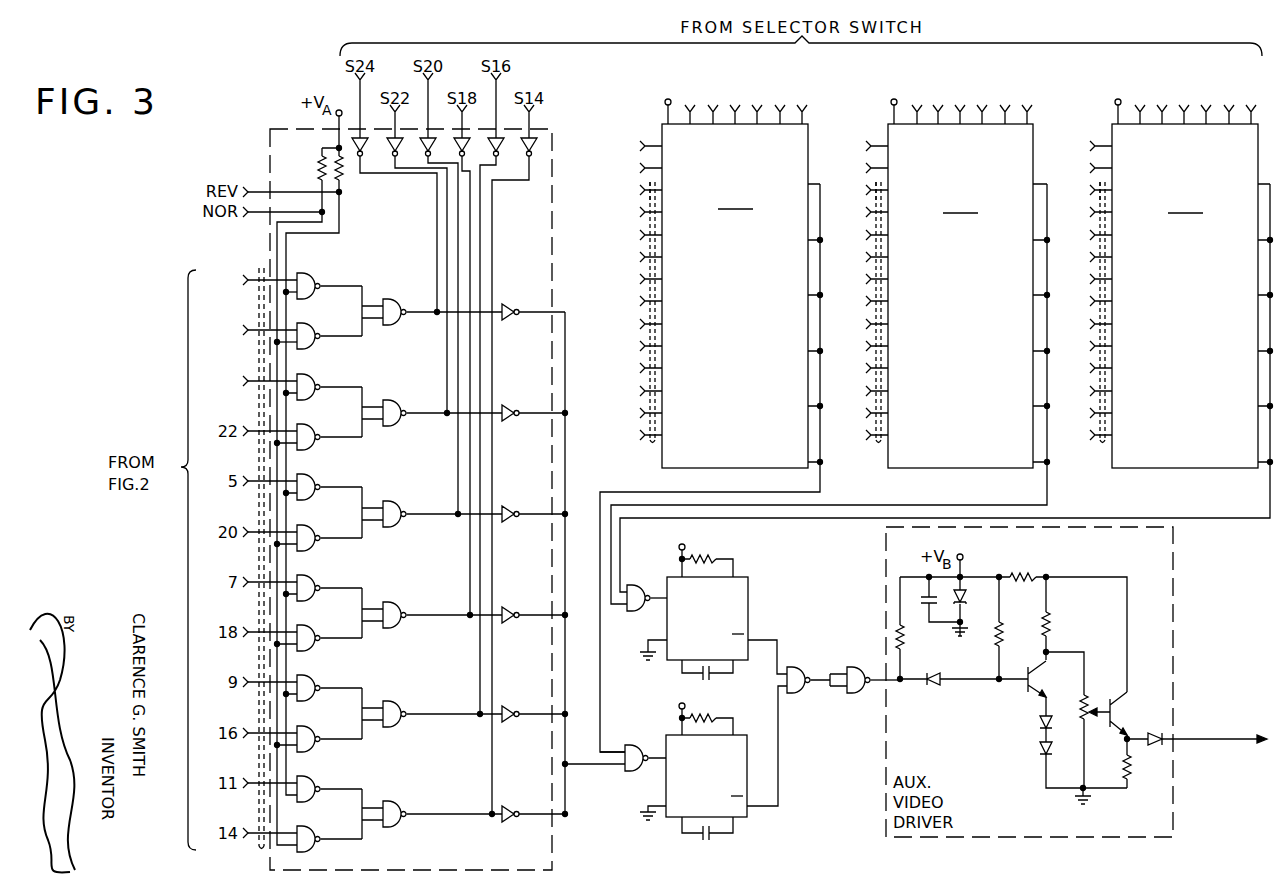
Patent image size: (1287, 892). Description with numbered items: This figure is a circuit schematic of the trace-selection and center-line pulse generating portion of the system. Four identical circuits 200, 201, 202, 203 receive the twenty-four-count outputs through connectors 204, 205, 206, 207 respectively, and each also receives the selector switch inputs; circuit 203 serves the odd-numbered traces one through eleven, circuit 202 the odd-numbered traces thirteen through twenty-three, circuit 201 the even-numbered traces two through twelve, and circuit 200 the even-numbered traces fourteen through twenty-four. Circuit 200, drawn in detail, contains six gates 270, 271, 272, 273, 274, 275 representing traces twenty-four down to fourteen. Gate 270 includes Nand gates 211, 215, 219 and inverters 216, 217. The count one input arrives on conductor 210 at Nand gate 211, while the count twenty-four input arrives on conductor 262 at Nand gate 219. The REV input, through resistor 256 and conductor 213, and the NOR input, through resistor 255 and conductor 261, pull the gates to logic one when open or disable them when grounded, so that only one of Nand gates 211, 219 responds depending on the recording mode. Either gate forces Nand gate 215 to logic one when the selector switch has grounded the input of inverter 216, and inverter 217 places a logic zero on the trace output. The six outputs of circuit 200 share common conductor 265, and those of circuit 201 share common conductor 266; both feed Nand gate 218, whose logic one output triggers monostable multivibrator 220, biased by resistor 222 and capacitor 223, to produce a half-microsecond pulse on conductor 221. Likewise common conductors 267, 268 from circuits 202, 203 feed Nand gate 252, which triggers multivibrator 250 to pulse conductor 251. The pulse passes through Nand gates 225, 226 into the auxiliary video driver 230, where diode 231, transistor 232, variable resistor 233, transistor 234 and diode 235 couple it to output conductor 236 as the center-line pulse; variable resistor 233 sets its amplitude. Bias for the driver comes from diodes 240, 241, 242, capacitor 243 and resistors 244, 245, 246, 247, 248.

The circuit 200 is at (308, 157).
The circuit 201 is at (713, 270).
The circuit 202 is at (939, 270).
The circuit 203 is at (1163, 270).
The connector 204 is at (262, 272).
The connector 205 is at (660, 192).
The connector 206 is at (886, 192).
The connector 207 is at (1110, 192).
The conductor 210 is at (297, 276).
The Nand gate 211 is at (320, 281).
The conductor 213 is at (292, 294).
The Nand gate 215 is at (398, 306).
The inverter 216 is at (366, 150).
The inverter 217 is at (507, 322).
The Nand gate 218 is at (623, 770).
The Nand gate 219 is at (308, 344).
The monostable multivibrator 220 is at (664, 740).
The conductor 221 is at (780, 788).
The resistor 222 is at (710, 714).
The capacitor 223 is at (712, 838).
The Nand gate 225 is at (800, 694).
The Nand gate 226 is at (860, 694).
The auxiliary video driver 230 is at (1176, 627).
The diode 231 is at (936, 688).
The transistor 232 is at (1085, 683).
The variable resistor 233 is at (1090, 698).
The transistor 234 is at (1165, 721).
The diode 235 is at (1153, 748).
The output conductor 236 is at (1185, 746).
The diode 240 is at (965, 590).
The diode 241 is at (1036, 722).
The diode 242 is at (1036, 752).
The capacitor 243 is at (928, 606).
The resistor 244 is at (897, 642).
The resistor 245 is at (1004, 640).
The resistor 246 is at (1023, 572).
The resistor 247 is at (1050, 625).
The resistor 248 is at (1132, 780).
The monostable multivibrator 250 is at (750, 592).
The conductor 251 is at (772, 640).
The Nand gate 252 is at (630, 610).
The resistor 255 is at (318, 170).
The resistor 256 is at (341, 178).
The conductor 261 is at (298, 378).
The conductor 262 is at (297, 330).
The common conductor 265 is at (568, 770).
The common conductor 266 is at (660, 490).
The common conductor 267 is at (1050, 505).
The common conductor 268 is at (1170, 522).
The gate 270 is at (418, 259).
The gate 271 is at (418, 376).
The gate 272 is at (418, 477).
The gate 273 is at (418, 578).
The gate 274 is at (418, 677).
The gate 275 is at (418, 776).